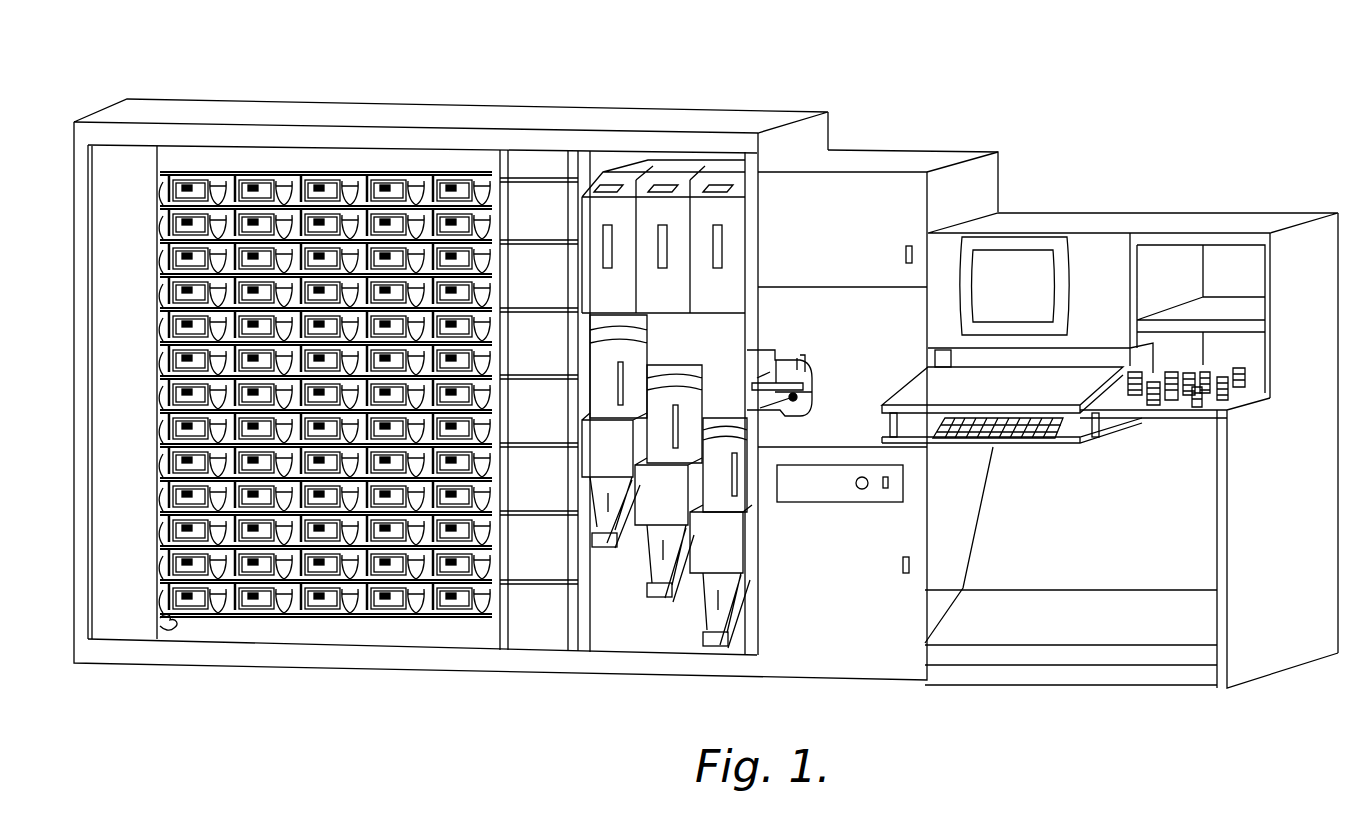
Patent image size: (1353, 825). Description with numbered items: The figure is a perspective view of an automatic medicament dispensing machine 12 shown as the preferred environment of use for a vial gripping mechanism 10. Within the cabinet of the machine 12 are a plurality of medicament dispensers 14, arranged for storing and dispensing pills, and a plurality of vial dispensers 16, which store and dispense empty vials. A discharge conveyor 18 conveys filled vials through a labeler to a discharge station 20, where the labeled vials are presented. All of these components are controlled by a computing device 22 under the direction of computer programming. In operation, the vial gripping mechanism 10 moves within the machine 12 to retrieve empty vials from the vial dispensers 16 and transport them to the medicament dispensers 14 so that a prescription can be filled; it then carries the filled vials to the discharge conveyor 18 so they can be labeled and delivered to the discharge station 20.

The vial gripping mechanism 10 is at (186, 626).
The automatic medicament dispensing machine 12 is at (519, 70).
The medicament dispensers 14 is at (268, 183).
The vial dispensers 16 is at (618, 215).
The discharge conveyor 18 is at (770, 393).
The discharge station 20 is at (1235, 400).
The computing device 22 is at (1058, 170).